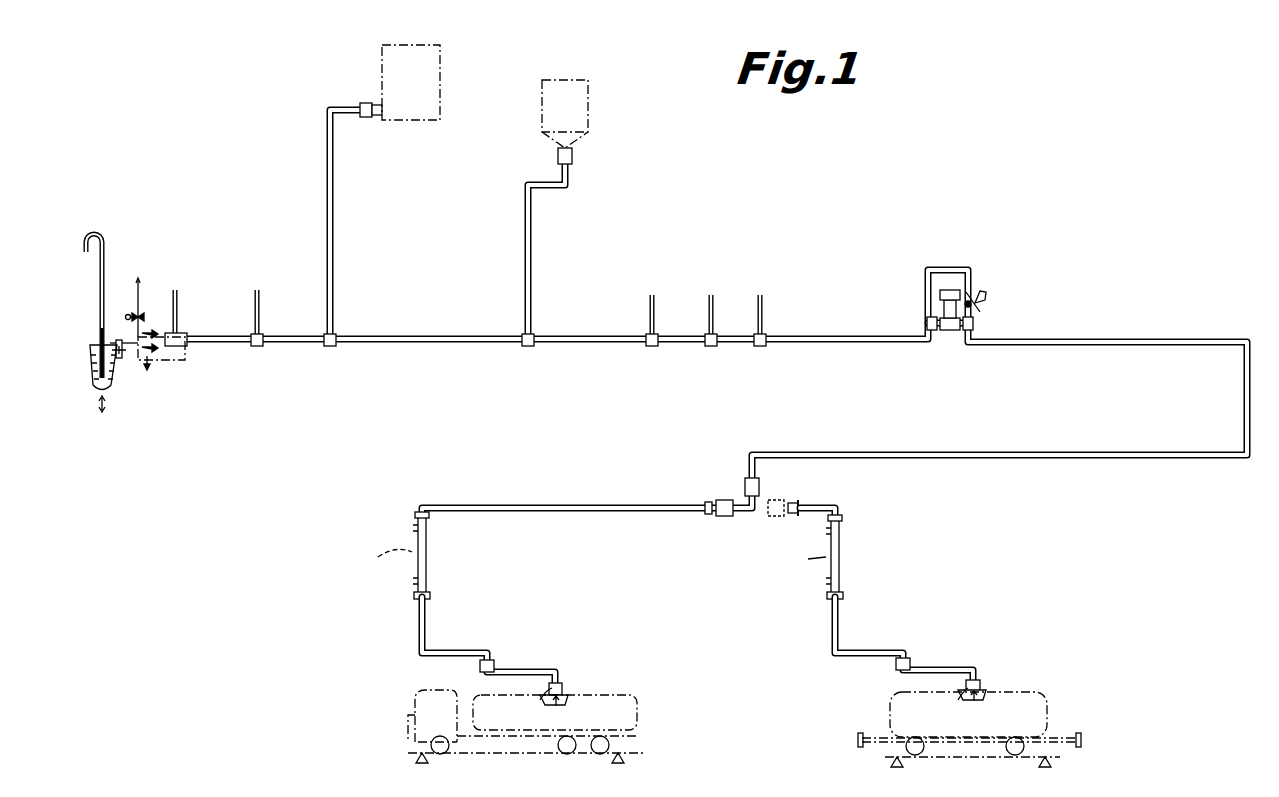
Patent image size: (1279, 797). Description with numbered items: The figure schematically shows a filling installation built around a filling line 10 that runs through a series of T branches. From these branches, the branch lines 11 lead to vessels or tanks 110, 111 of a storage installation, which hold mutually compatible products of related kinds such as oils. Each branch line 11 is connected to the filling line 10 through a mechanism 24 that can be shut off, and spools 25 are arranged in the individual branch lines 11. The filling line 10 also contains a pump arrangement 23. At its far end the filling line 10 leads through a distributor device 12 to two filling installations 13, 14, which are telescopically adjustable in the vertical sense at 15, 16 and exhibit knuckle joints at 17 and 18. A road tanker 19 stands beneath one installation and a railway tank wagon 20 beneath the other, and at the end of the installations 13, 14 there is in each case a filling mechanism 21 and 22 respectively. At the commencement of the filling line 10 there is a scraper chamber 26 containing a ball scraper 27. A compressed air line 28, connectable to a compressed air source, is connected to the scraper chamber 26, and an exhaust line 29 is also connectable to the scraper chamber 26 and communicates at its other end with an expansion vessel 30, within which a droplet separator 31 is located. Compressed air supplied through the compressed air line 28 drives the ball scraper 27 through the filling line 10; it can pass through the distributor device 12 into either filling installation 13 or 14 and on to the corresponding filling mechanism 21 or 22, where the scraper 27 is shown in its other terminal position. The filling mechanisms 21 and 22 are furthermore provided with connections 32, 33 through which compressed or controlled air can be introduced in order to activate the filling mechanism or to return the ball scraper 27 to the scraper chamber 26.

The filling line 10 is at (422, 337).
The branch lines 11 is at (335, 208).
The distributor device 12 is at (748, 518).
The filling installation 13 is at (846, 551).
The filling installation 14 is at (428, 557).
The telescopic adjustment 15 is at (804, 559).
The telescopic adjustment 16 is at (381, 559).
The knuckle joint 17 is at (908, 655).
The knuckle joint 18 is at (493, 660).
The road tanker 19 is at (633, 697).
The railway tank wagon 20 is at (1045, 708).
The filling mechanism 21 is at (980, 682).
The filling mechanism 22 is at (562, 683).
The pump arrangement 23 is at (950, 335).
The shut-off mechanisms 24 is at (258, 347).
The spools 25 is at (366, 101).
The scraper chamber 26 is at (173, 333).
The ball scraper 27 is at (160, 358).
The compressed air line 28 is at (140, 282).
The exhaust line 29 is at (119, 340).
The expansion vessel 30 is at (96, 393).
The droplet separator 31 is at (100, 342).
The connection 32 is at (965, 690).
The connection 33 is at (545, 690).
The vessel or tank 110 is at (448, 55).
The vessel or tank 111 is at (588, 77).